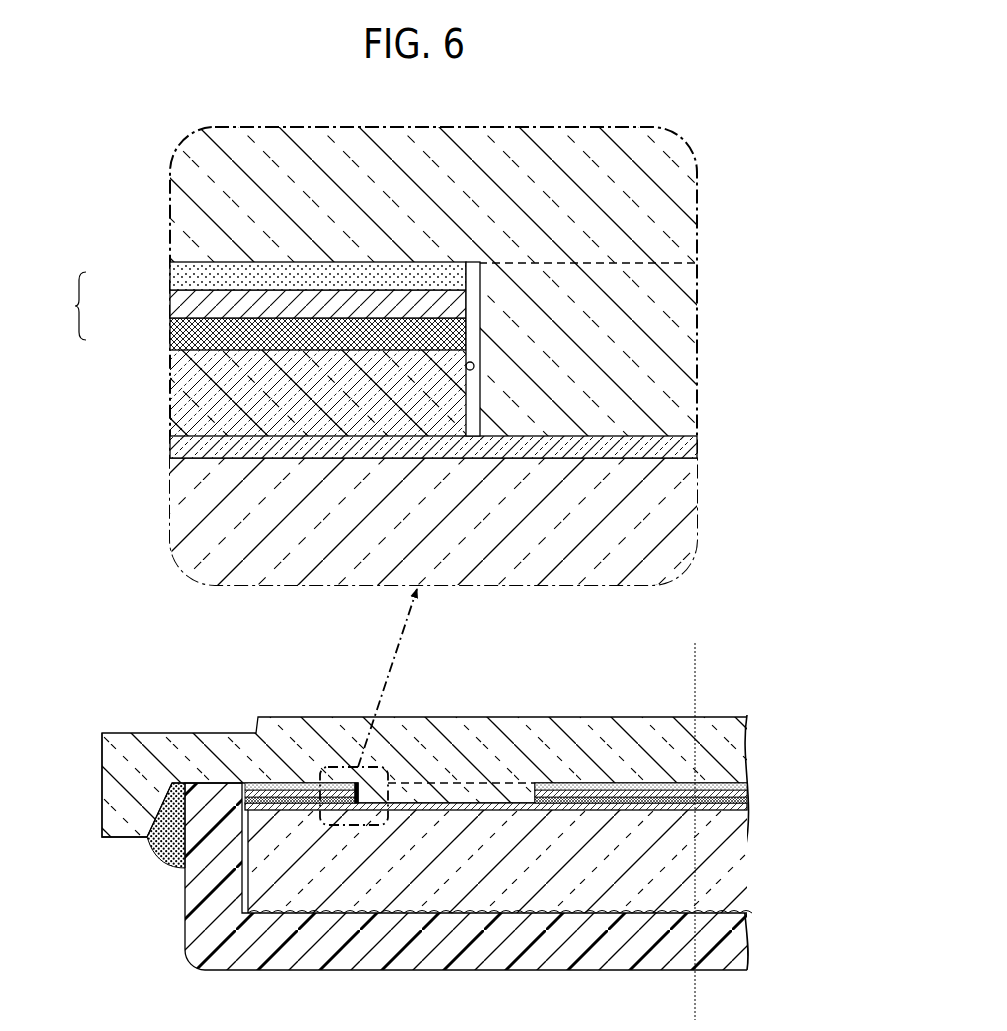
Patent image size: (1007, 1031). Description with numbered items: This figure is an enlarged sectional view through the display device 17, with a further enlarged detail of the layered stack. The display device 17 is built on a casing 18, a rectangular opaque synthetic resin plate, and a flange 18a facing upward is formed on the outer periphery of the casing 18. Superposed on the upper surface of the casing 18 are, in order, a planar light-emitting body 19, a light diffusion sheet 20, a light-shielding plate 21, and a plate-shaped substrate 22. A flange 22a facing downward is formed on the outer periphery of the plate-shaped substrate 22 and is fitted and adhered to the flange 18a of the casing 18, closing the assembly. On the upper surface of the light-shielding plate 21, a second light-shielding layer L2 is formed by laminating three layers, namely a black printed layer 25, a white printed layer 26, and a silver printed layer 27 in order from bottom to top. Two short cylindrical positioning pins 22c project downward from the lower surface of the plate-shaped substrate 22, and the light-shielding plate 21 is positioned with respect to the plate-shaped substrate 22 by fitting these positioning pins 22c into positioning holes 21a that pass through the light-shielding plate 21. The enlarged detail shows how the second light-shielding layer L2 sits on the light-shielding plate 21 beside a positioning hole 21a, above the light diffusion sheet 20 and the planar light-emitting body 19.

The display device 17 is at (638, 688).
The casing 18 is at (183, 937).
The flange 18a is at (185, 880).
The planar light-emitting body 19 is at (680, 522).
The light diffusion sheet 20 is at (690, 447).
The light-shielding plate 21 is at (480, 350).
The positioning hole 21a is at (466, 368).
The plate-shaped substrate 22 is at (700, 206).
The flange 22a is at (103, 783).
The positioning pin 22c is at (683, 356).
The black printed layer 25 is at (170, 340).
The white printed layer 26 is at (170, 304).
The silver printed layer 27 is at (170, 276).
The second light-shielding layer L2 is at (798, 735).